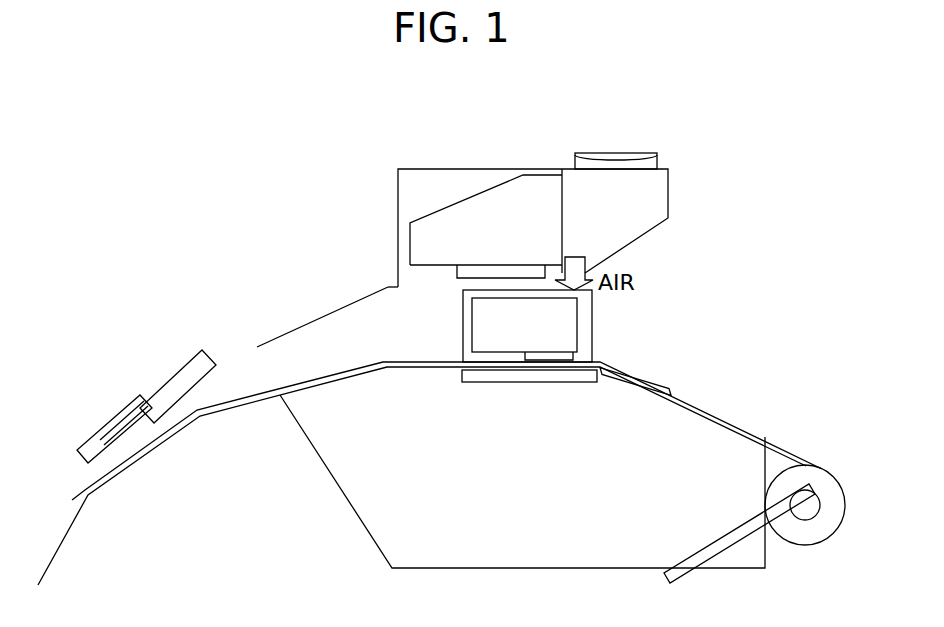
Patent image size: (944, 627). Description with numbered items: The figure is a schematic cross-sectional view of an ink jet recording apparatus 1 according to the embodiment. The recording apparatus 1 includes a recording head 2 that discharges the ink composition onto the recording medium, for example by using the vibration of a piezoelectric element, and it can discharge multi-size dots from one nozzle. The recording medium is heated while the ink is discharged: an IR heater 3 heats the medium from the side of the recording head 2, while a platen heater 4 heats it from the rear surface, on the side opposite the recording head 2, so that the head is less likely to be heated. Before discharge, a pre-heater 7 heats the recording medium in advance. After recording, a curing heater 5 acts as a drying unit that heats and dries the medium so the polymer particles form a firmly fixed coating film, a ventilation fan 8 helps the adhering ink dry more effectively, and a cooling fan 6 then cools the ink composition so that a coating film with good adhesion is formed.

The recording apparatus 1 is at (800, 448).
The recording head 2 is at (572, 357).
The IR heater 3 is at (457, 270).
The platen heater 4 is at (533, 376).
The curing heater 5 is at (182, 378).
The cooling fan 6 is at (107, 423).
The pre-heater 7 is at (638, 390).
The ventilation fan 8 is at (620, 152).